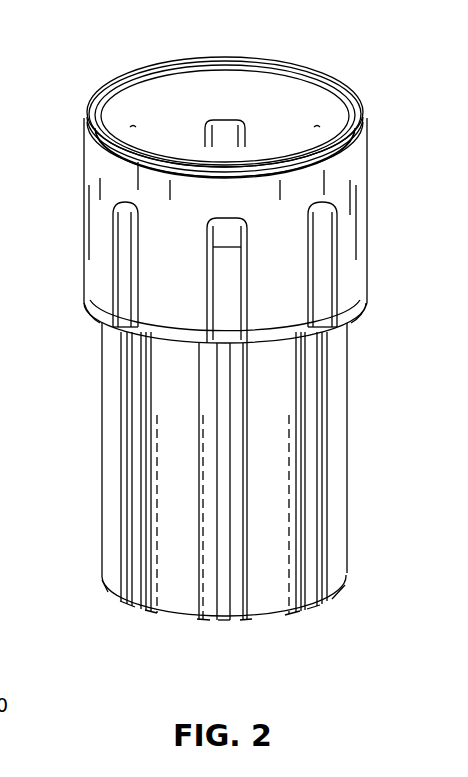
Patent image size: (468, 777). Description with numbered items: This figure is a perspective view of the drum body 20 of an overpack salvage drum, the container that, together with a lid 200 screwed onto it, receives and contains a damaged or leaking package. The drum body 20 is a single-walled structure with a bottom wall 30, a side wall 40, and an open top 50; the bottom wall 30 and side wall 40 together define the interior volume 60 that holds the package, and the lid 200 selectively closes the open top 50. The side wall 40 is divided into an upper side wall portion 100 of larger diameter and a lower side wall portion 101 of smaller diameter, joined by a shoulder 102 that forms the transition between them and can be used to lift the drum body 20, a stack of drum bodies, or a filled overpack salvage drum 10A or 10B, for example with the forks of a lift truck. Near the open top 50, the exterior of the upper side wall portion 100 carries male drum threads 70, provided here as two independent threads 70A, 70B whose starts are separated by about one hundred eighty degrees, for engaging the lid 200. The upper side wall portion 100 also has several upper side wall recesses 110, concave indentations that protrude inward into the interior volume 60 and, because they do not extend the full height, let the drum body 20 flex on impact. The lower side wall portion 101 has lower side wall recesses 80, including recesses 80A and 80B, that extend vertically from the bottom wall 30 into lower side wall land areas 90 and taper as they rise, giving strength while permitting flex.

The overpack salvage drum 10A is at (0, 570).
The overpack salvage drum 10B is at (5, 48).
The drum body 20 is at (295, 197).
The bottom wall 30 is at (300, 609).
The side wall 40 is at (273, 497).
The open top 50 is at (306, 58).
The interior volume 60 is at (246, 94).
The male drum threads 70 is at (368, 95).
The first male thread 70A is at (94, 133).
The second male thread 70B is at (90, 106).
The lower side wall recesses 80 is at (250, 625).
The first lower side wall recesses 80A is at (125, 583).
The second lower side wall recesses 80B is at (150, 598).
The lower side wall land areas 90 is at (225, 557).
The upper side wall portion 100 is at (398, 95).
The lower side wall portion 101 is at (398, 600).
The shoulder 102 is at (86, 325).
The upper side wall recesses 110 is at (226, 126).
The lid 200 is at (16, 339).